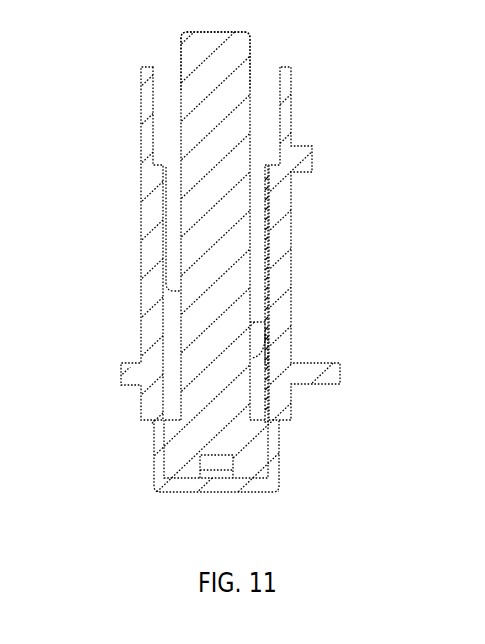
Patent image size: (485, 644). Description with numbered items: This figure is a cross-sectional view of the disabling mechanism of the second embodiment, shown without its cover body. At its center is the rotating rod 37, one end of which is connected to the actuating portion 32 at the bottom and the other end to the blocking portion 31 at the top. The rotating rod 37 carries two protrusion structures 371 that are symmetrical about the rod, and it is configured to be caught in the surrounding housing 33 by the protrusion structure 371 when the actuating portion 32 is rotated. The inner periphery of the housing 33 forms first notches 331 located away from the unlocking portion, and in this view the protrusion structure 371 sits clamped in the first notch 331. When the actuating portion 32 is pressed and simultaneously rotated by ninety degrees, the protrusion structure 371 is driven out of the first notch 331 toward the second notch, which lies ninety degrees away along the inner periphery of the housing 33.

The blocking portion 31 is at (210, 49).
The actuating portion 32 is at (190, 447).
The housing 33 is at (278, 234).
The first notch 331 is at (266, 348).
The rotating rod 37 is at (205, 343).
The protrusion structure 371 is at (256, 334).